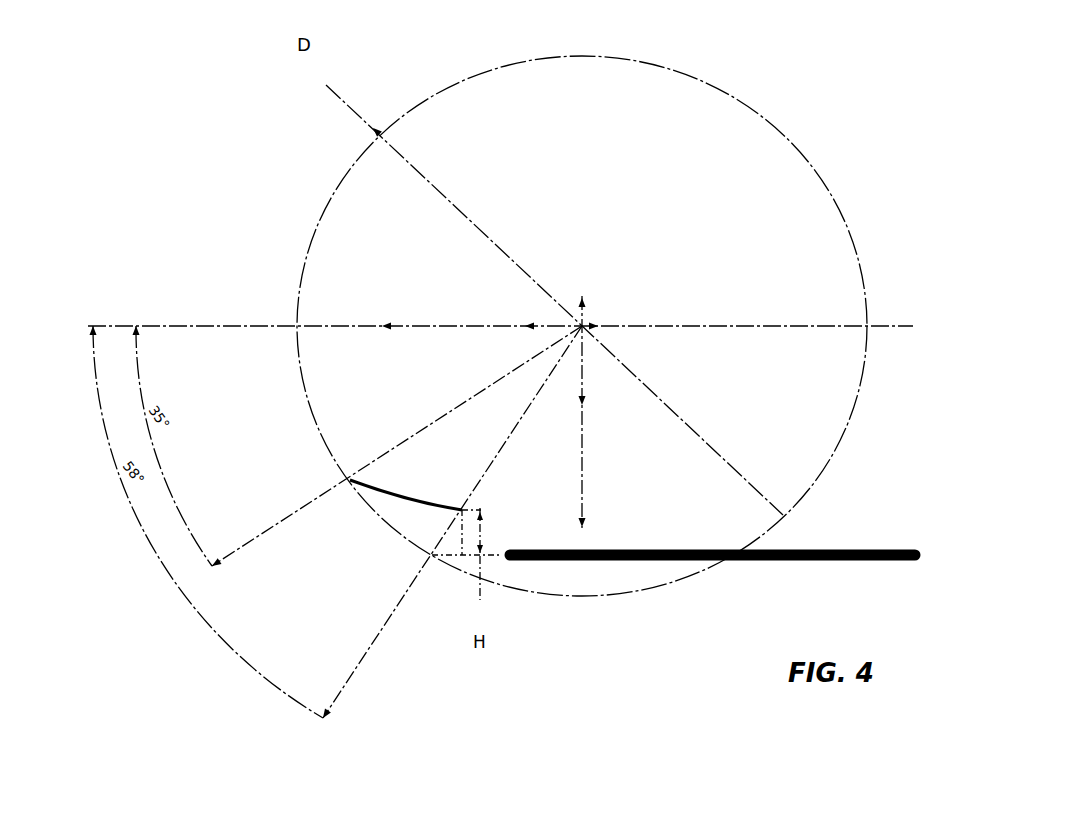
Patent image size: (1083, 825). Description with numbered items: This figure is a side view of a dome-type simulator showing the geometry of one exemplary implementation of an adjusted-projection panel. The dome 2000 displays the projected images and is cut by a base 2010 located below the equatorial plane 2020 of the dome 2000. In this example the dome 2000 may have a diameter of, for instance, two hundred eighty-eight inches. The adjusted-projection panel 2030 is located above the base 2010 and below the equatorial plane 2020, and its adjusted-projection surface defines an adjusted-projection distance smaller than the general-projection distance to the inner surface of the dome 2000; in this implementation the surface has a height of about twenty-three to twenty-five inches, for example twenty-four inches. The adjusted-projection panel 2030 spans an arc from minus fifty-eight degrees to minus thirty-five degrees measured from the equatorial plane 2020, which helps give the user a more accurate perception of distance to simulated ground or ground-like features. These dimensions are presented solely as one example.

The dome 2000 is at (767, 117).
The equatorial plane 2020 is at (898, 326).
The base 2010 is at (868, 549).
The adjusted-projection panel 2030 is at (417, 500).